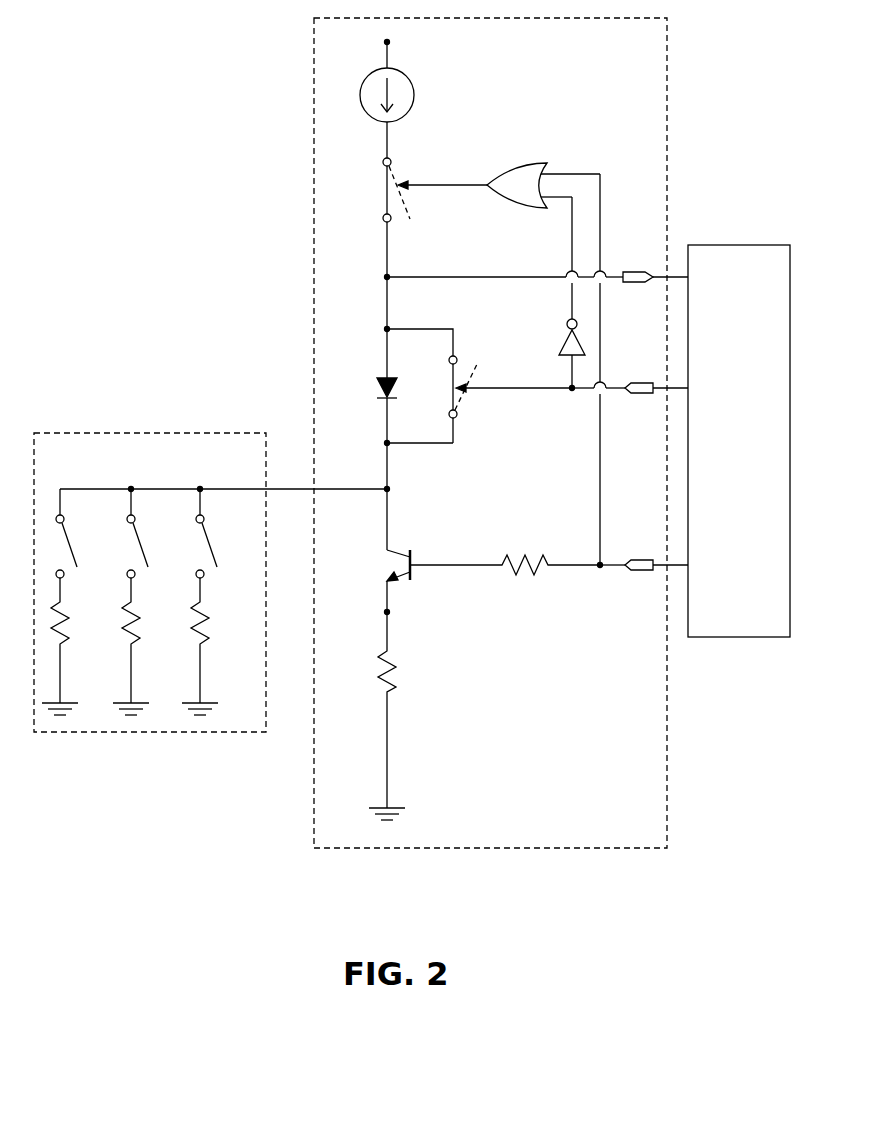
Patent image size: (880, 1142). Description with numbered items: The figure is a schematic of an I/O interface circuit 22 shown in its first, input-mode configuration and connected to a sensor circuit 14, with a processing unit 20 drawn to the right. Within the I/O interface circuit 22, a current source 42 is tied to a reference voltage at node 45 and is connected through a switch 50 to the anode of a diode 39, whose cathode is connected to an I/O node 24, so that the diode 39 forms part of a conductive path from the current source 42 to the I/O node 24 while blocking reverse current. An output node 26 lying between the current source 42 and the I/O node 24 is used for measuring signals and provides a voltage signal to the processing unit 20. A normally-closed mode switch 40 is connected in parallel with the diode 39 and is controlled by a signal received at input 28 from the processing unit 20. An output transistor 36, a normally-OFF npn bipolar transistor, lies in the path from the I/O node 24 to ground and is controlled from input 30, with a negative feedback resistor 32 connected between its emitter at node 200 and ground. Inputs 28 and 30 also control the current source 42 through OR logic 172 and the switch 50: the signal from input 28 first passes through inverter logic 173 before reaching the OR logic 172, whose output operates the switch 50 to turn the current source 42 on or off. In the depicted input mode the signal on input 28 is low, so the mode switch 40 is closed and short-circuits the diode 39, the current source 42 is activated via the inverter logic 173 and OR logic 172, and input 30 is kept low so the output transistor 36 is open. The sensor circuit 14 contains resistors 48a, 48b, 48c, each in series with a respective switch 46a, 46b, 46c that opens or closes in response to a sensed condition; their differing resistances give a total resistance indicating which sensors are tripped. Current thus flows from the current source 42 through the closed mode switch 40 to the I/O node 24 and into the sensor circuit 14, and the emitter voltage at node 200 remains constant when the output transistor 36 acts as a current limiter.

The sensor circuit 14 is at (161, 462).
The processing unit 20 is at (729, 476).
The I/O interface circuit 22 is at (663, 844).
The I/O node 24 is at (391, 488).
The output node 26 is at (634, 272).
The input 28 is at (636, 383).
The input 30 is at (639, 560).
The negative feedback resistor 32 is at (397, 672).
The output transistor 36 is at (412, 557).
The diode 39 is at (376, 388).
The mode switch 40 is at (450, 380).
The current source 42 is at (415, 97).
The node 45 is at (391, 43).
The switch 46a is at (71, 551).
The switch 46b is at (142, 551).
The switch 46c is at (211, 551).
The resistor 48a is at (90, 624).
The resistor 48b is at (160, 624).
The resistor 48c is at (229, 624).
The switch 50 is at (385, 179).
The OR logic 172 is at (513, 176).
The inverter logic 173 is at (563, 340).
The node 200 is at (391, 612).